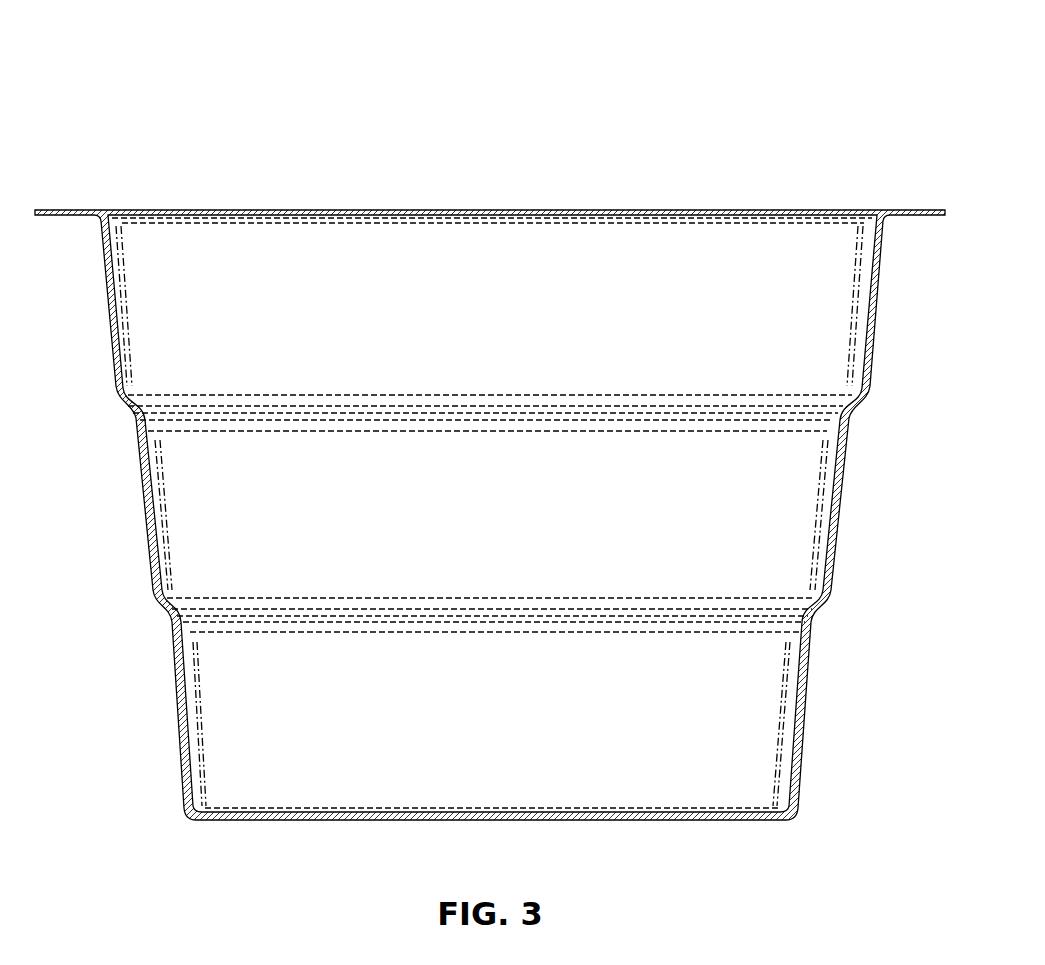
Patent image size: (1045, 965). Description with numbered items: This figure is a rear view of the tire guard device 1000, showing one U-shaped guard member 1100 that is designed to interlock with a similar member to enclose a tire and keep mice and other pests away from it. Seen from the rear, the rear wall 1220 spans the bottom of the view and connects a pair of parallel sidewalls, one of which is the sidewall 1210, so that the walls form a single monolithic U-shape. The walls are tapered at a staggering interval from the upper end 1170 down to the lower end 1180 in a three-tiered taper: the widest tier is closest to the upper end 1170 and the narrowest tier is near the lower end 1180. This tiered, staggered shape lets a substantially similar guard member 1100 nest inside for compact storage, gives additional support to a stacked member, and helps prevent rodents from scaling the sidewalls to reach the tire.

The tire guard device 1000 is at (742, 148).
The upper end 1170 is at (870, 249).
The guard member 1100 is at (870, 378).
The sidewall 1210 is at (107, 305).
The lower end 1180 is at (796, 795).
The rear wall 1220 is at (330, 793).